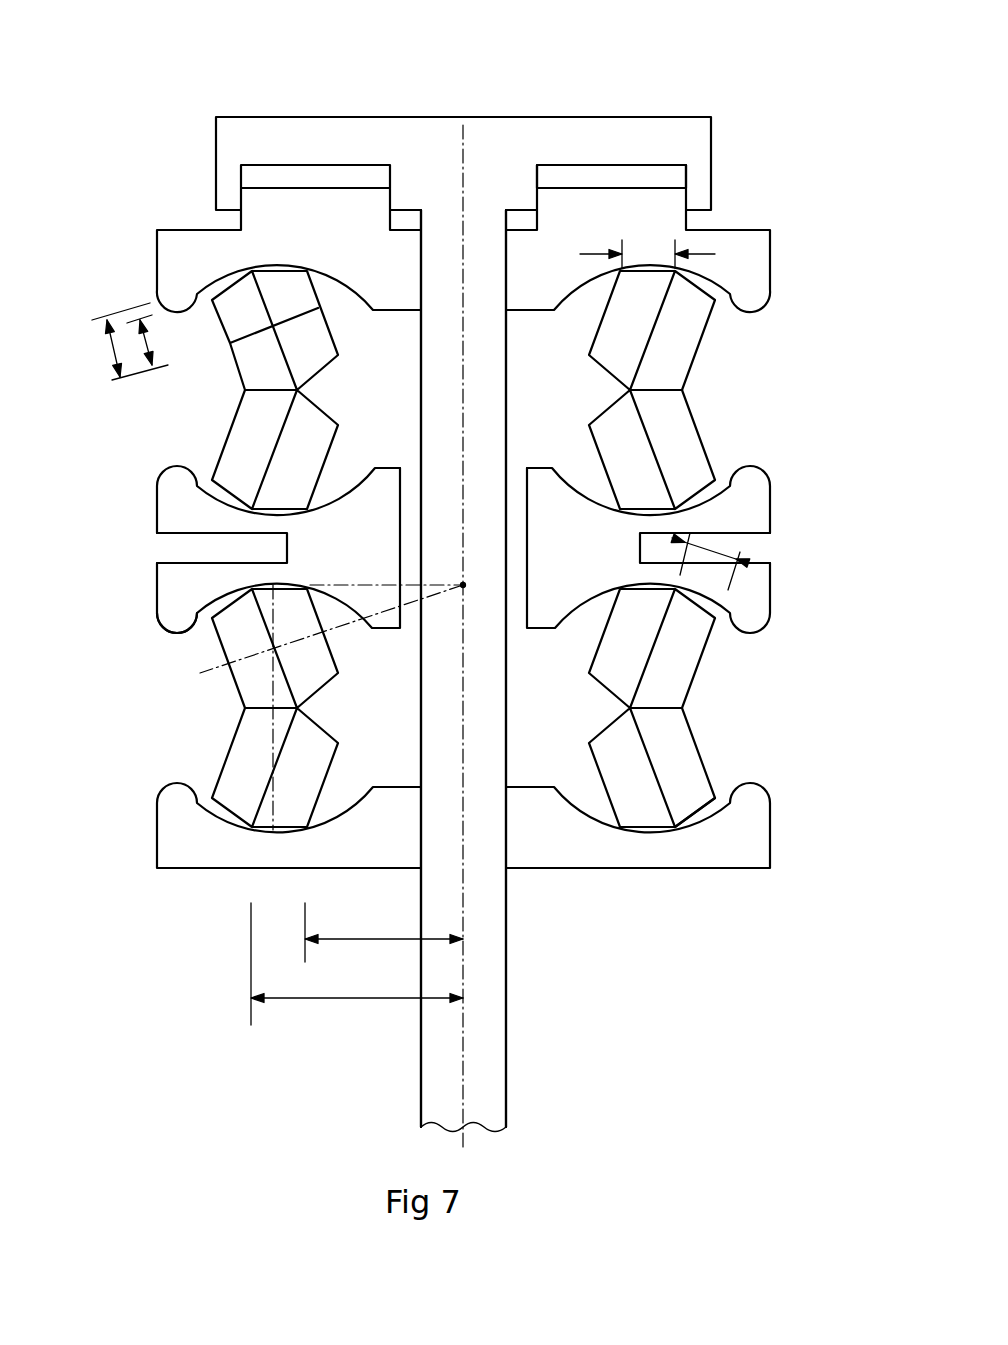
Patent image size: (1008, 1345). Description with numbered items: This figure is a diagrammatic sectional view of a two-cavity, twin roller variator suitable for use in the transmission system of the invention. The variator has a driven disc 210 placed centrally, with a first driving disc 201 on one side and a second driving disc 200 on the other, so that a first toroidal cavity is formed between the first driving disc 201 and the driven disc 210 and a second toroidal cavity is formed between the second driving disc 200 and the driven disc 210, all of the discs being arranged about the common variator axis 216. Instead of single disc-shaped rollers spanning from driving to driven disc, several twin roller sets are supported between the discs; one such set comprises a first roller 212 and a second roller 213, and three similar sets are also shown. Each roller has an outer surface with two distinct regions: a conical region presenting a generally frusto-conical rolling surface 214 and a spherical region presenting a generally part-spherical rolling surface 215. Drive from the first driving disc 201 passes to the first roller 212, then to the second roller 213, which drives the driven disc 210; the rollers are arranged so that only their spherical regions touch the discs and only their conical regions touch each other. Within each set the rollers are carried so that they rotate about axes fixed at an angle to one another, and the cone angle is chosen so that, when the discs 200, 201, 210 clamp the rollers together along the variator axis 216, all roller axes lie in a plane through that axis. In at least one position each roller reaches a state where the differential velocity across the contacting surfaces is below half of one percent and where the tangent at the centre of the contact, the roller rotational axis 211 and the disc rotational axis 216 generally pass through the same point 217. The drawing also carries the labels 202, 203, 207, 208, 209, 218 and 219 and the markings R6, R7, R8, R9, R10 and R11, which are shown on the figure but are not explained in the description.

The second driving disc 200 is at (183, 228).
The first driving disc 201 is at (157, 835).
The second inner ring part 202 is at (748, 628).
The first inner ring part 203 is at (765, 465).
The flange insert 207 is at (562, 180).
The shaft 208 is at (507, 952).
The axis of rotation 209 is at (463, 117).
The driven disc 210 is at (347, 583).
The roller rotational axis 211 is at (240, 643).
The first roller 212 is at (688, 327).
The second roller 213 is at (683, 425).
The frusto-conical rolling surface 214 is at (683, 750).
The part-spherical rolling surface 215 is at (640, 815).
The variator axis 216 is at (462, 437).
The common point 217 is at (466, 588).
The roller end width 218 is at (633, 253).
The gap 219 is at (715, 548).
The radius R6 is at (119, 341).
The radius R7 is at (145, 347).
The radius R8 is at (384, 932).
The radius R9 is at (357, 964).
The radius R10 is at (193, 616).
The radius R11 is at (340, 630).